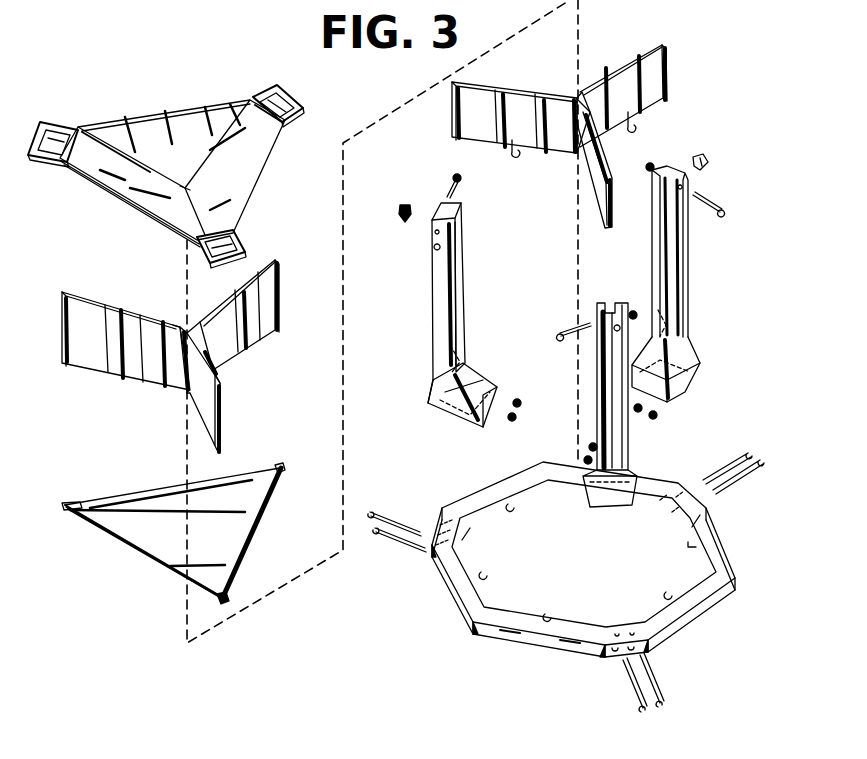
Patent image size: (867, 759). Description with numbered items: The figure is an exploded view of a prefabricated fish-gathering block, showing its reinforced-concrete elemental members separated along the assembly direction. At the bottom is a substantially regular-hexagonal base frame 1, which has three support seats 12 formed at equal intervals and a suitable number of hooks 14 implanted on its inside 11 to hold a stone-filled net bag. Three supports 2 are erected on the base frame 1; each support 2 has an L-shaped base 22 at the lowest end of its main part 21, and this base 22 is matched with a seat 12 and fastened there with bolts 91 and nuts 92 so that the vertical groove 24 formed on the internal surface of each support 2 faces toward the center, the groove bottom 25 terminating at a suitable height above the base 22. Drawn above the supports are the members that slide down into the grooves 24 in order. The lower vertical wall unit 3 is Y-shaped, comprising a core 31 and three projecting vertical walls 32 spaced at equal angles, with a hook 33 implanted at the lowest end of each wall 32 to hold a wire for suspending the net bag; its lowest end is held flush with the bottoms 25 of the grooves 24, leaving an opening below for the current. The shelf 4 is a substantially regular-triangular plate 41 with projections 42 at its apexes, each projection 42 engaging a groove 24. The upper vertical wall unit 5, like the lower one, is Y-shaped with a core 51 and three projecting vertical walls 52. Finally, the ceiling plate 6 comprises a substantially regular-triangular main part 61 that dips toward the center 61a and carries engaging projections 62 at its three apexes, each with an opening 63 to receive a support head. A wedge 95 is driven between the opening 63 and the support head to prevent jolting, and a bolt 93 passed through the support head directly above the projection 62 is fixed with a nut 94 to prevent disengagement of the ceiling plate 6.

The base frame 1 is at (735, 542).
The inside of the base frame 11 is at (609, 570).
The support seat 12 is at (467, 542).
The hook 14 is at (512, 510).
The support 2 is at (424, 304).
The main part of the support 21 is at (440, 338).
The L-shaped base 22 is at (440, 397).
The vertical groove 24 is at (460, 270).
The groove bottom 25 is at (462, 350).
The lower vertical wall unit 3 is at (668, 72).
The core 31 is at (582, 92).
The projecting vertical wall 32 is at (520, 92).
The hook 33 is at (635, 127).
The shelf 4 is at (258, 504).
The triangular plate 41 is at (235, 540).
The projection 42 is at (280, 468).
The upper vertical wall unit 5 is at (257, 348).
The core 51 is at (178, 322).
The projecting vertical wall 52 is at (85, 300).
The ceiling plate 6 is at (212, 115).
The main part of the ceiling plate 61 is at (255, 165).
The center of the ceiling plate 61a is at (188, 190).
The engaging projection 62 is at (300, 100).
The opening 63 is at (272, 95).
The bolt 91 is at (762, 460).
The nut 92 is at (518, 418).
The bolt 93 is at (722, 216).
The nut 94 is at (652, 165).
The wedge 95 is at (400, 212).